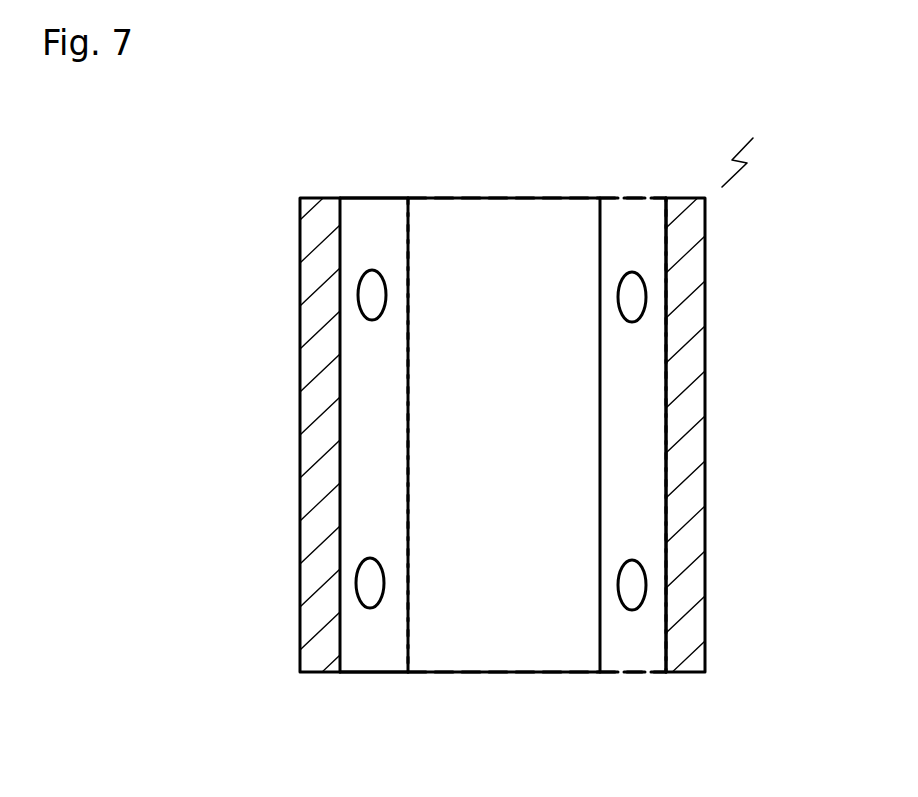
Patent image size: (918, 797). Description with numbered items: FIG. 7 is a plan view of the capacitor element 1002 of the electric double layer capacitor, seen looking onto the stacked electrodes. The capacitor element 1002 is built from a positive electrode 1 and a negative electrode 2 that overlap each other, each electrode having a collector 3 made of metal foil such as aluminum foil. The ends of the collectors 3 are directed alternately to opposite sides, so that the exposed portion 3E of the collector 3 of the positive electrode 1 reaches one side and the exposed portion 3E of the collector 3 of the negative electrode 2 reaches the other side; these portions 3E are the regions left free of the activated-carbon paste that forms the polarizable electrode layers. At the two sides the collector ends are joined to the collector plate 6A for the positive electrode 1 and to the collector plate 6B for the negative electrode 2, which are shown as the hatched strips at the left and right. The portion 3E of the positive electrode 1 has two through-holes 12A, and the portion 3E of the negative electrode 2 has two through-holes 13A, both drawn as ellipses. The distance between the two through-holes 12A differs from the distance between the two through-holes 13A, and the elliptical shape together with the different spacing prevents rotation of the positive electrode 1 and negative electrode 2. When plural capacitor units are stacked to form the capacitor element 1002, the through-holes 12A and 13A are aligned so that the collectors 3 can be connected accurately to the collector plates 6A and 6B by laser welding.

The positive electrode 1 is at (593, 686).
The negative electrode 2 is at (663, 185).
The collector 3 is at (375, 212).
The portion of collector surface 3E is at (398, 196).
The collector plate 6A is at (312, 647).
The collector plate 6B is at (696, 655).
The through-holes 12A is at (362, 578).
The through-holes 13A is at (637, 580).
The capacitor element 1002 is at (750, 146).